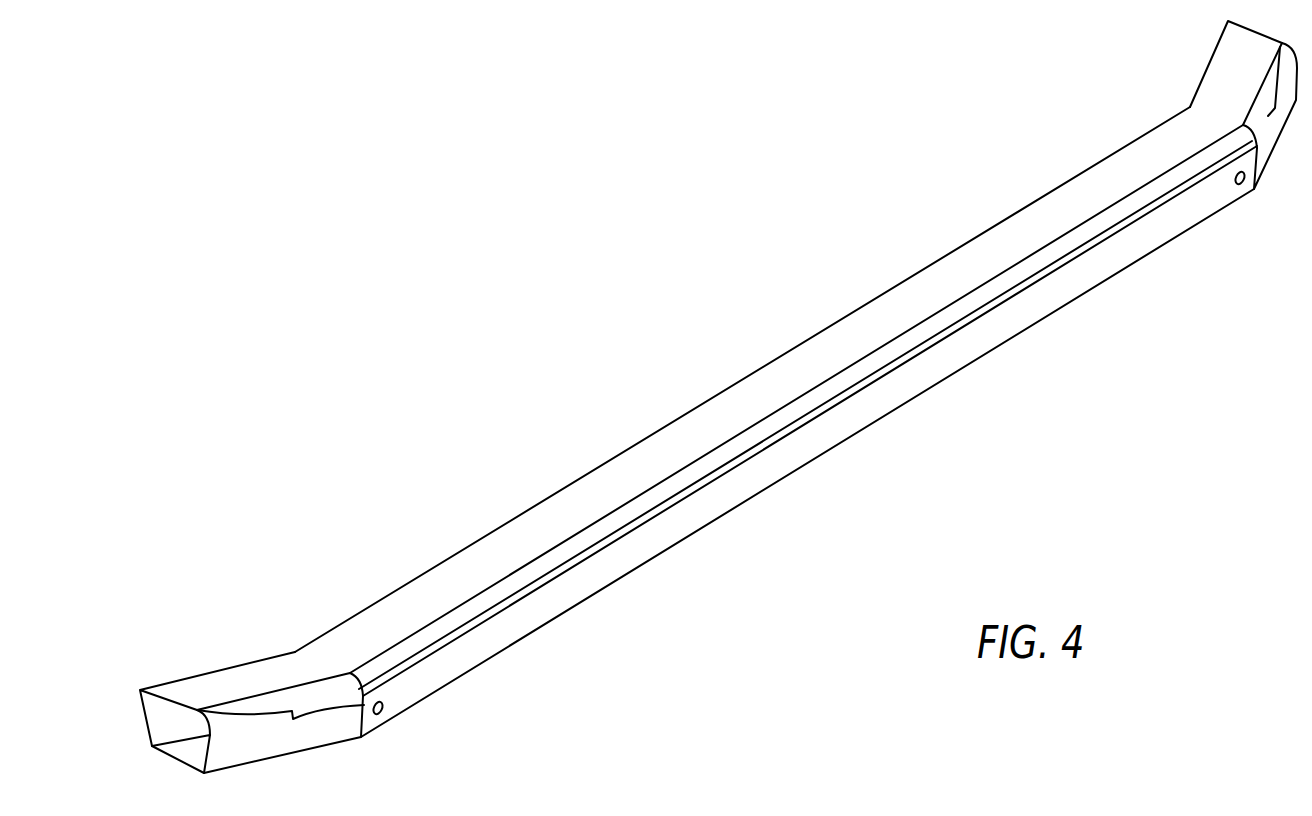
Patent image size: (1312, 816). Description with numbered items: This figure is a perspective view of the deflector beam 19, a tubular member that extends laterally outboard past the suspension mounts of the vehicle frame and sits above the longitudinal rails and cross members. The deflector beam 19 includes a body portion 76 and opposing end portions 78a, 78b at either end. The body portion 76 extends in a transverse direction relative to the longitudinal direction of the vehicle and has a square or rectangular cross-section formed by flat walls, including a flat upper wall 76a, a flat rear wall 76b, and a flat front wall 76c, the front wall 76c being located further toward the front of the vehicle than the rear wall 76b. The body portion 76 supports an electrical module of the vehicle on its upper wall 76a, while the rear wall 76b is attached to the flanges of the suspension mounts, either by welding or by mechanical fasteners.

The deflector beam 19 is at (417, 502).
The body portion 76 is at (593, 472).
The upper wall 76a is at (779, 380).
The rear wall 76b is at (965, 345).
The front wall 76c is at (913, 273).
The end portion 78a is at (1213, 57).
The end portion 78b is at (248, 658).